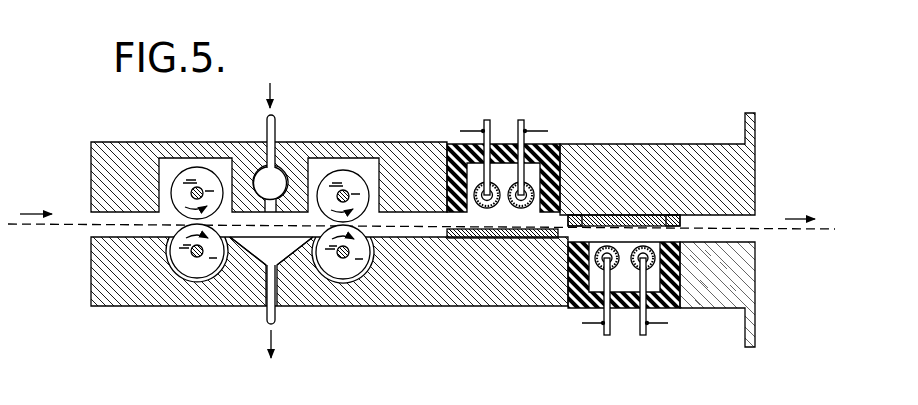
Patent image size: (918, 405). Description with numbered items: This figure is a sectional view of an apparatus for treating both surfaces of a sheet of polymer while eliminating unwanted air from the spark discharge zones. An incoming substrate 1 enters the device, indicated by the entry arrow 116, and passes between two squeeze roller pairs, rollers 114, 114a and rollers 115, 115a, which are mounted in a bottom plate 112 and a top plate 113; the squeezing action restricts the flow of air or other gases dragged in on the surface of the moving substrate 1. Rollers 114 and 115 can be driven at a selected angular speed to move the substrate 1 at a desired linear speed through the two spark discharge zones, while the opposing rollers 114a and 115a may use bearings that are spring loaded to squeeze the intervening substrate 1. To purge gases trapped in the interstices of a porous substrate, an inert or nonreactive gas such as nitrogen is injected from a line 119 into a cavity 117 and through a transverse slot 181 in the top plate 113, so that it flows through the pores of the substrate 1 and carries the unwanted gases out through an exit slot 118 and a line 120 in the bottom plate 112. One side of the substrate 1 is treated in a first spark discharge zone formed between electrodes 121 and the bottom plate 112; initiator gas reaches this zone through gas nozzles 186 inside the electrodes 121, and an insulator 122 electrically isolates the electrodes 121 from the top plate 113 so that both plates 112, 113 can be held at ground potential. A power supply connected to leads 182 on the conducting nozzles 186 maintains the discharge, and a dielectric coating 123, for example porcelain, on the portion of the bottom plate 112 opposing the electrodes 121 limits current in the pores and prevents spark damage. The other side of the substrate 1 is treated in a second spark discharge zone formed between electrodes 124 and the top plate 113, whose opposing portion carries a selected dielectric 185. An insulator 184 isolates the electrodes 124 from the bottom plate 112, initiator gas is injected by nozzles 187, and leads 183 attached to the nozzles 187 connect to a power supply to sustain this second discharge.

The substrate 1 is at (48, 227).
The bottom plate 112 is at (426, 298).
The top plate 113 is at (614, 158).
The squeeze roller 114 is at (195, 273).
The opposing squeeze roller 114a is at (190, 166).
The squeeze roller 115 is at (347, 275).
The opposing squeeze roller 115a is at (356, 186).
The incoming web 116 is at (97, 218).
The cavity 117 is at (265, 188).
The exit slot 118 is at (267, 252).
The line 119 is at (277, 120).
The line 120 is at (278, 316).
The electrodes 121 is at (522, 183).
The insulator 122 is at (445, 145).
The dielectric coating 123 is at (468, 238).
The electrodes 124 is at (636, 268).
The transverse slot 181 is at (284, 206).
The leads 182 is at (538, 130).
The leads 183 is at (666, 324).
The insulator 184 is at (675, 306).
The dielectric 185 is at (663, 214).
The gas nozzles 186 is at (522, 206).
The nozzles 187 is at (648, 214).